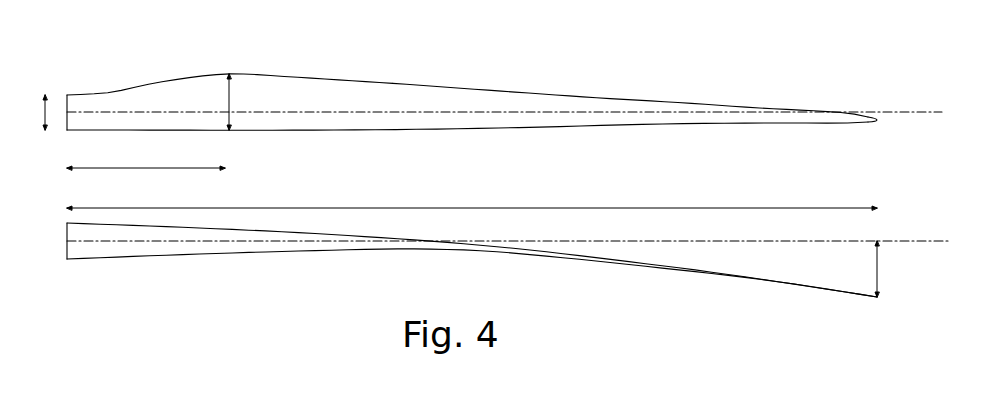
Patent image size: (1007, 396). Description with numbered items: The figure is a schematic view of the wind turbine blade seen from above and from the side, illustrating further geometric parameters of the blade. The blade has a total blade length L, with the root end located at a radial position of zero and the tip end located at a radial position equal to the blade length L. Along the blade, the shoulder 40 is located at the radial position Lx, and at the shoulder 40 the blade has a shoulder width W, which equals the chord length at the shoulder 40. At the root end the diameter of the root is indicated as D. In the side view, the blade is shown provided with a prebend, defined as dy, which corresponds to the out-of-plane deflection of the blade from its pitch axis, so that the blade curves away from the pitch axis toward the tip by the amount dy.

The shoulder 40 is at (230, 73).
The root diameter D is at (37, 112).
The shoulder width W is at (239, 102).
The shoulder position Lx is at (146, 159).
The total blade length L is at (472, 198).
The prebend dy is at (888, 269).